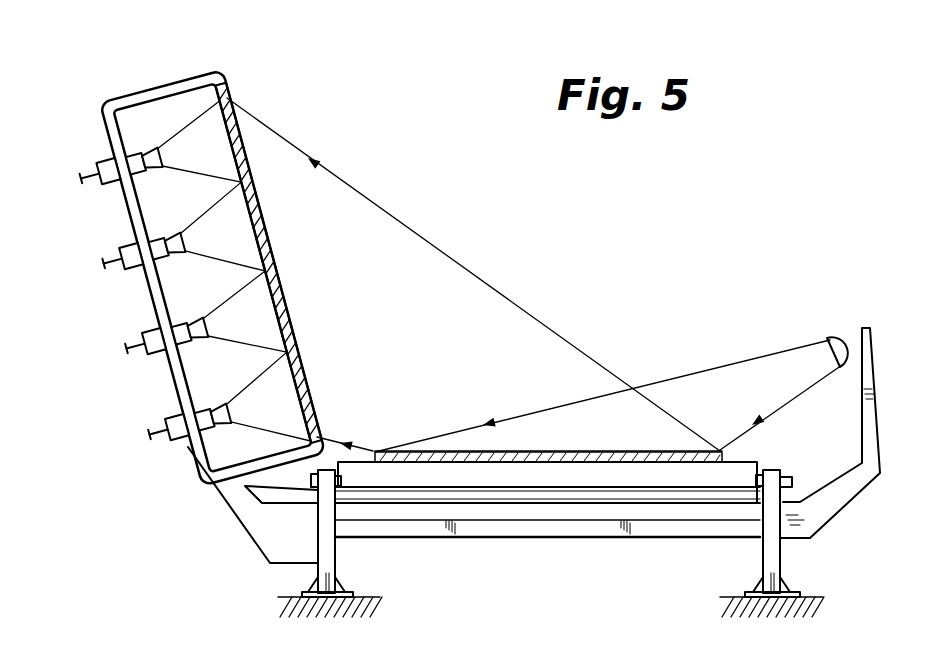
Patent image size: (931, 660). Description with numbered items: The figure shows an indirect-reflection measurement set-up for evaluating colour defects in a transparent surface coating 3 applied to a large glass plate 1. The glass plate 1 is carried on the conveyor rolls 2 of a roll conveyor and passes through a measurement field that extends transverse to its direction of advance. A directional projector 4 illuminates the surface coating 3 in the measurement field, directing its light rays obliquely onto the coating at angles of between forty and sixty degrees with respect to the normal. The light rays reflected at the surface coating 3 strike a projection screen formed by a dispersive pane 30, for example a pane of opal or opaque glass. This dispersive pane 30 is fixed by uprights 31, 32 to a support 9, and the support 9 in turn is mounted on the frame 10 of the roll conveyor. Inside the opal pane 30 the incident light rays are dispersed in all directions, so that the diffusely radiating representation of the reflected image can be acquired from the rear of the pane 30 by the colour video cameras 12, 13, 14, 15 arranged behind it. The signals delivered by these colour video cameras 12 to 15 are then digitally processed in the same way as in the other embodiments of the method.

The glass plate 1 is at (616, 457).
The conveyor rolls 2 is at (525, 478).
The surface coating 3 is at (532, 447).
The directional projector 4 is at (842, 350).
The support 9 is at (235, 518).
The frame 10 is at (385, 530).
The colour video camera 12 is at (170, 422).
The colour video camera 13 is at (148, 337).
The colour video camera 14 is at (123, 247).
The colour video camera 15 is at (102, 163).
The dispersive pane 30 is at (283, 315).
The upright 31 is at (136, 98).
The upright 32 is at (266, 467).